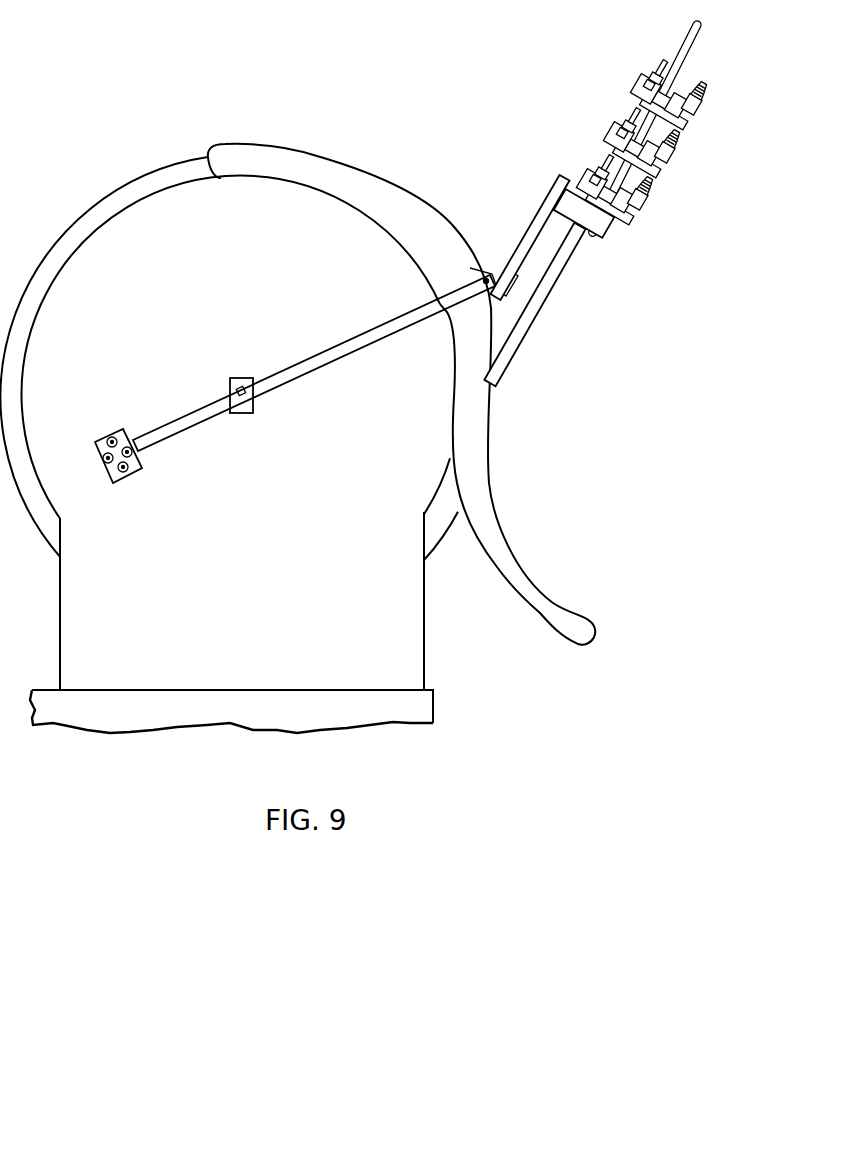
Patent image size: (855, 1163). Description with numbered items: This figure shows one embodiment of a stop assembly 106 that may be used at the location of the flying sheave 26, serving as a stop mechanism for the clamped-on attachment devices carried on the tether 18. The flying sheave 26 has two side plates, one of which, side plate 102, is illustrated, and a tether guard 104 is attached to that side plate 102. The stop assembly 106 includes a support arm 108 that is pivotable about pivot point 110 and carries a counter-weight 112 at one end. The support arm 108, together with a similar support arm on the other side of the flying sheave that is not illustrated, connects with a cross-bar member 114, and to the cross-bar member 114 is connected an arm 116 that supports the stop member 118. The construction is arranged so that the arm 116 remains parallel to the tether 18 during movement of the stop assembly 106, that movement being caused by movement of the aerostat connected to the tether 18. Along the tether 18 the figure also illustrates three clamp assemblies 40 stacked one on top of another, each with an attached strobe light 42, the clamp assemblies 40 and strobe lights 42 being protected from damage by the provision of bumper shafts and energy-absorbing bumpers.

The tether 18 is at (540, 313).
The flying sheave 26 is at (272, 132).
The clamp assembly 40 is at (640, 82).
The strobe light 42 is at (707, 95).
The side plate 102 is at (320, 215).
The tether guard 104 is at (490, 531).
The stop assembly 106 is at (500, 241).
The support arm 108 is at (285, 393).
The pivot point 110 is at (241, 389).
The counter-weight 112 is at (118, 430).
The cross-bar member 114 is at (482, 265).
The arm 116 is at (532, 222).
The stop member 118 is at (600, 229).